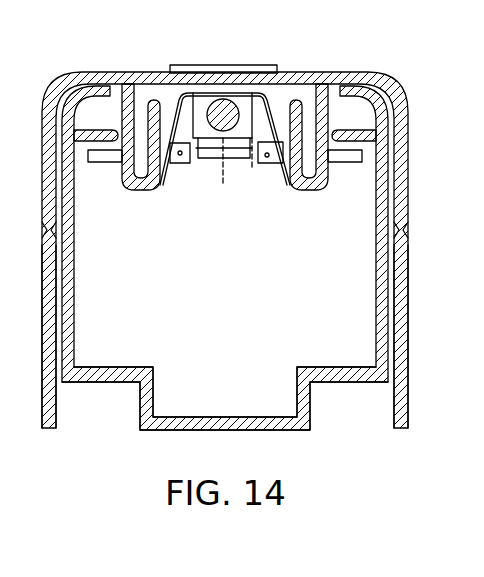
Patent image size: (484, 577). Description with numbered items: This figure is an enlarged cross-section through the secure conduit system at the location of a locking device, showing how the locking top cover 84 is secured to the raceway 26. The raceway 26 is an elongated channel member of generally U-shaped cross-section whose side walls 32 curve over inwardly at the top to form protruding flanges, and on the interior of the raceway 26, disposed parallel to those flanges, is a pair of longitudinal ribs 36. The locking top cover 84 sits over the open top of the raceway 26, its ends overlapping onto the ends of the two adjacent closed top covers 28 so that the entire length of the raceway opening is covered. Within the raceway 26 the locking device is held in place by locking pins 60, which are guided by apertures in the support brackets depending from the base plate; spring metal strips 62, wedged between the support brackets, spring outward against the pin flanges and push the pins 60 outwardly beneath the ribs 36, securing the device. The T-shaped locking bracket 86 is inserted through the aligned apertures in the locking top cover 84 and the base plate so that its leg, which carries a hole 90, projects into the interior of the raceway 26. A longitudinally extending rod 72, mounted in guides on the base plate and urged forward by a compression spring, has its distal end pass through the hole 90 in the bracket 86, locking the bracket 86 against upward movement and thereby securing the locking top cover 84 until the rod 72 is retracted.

The raceway 26 is at (307, 372).
The top cover 28 is at (58, 398).
The side wall 32 is at (67, 275).
The longitudinal rib 36 is at (108, 130).
The locking pin 60 is at (112, 162).
The spring metal strip 62 is at (165, 170).
The rod 72 is at (218, 100).
The locking top cover 84 is at (318, 73).
The T-shaped locking bracket 86 is at (232, 63).
The hole 90 is at (226, 132).